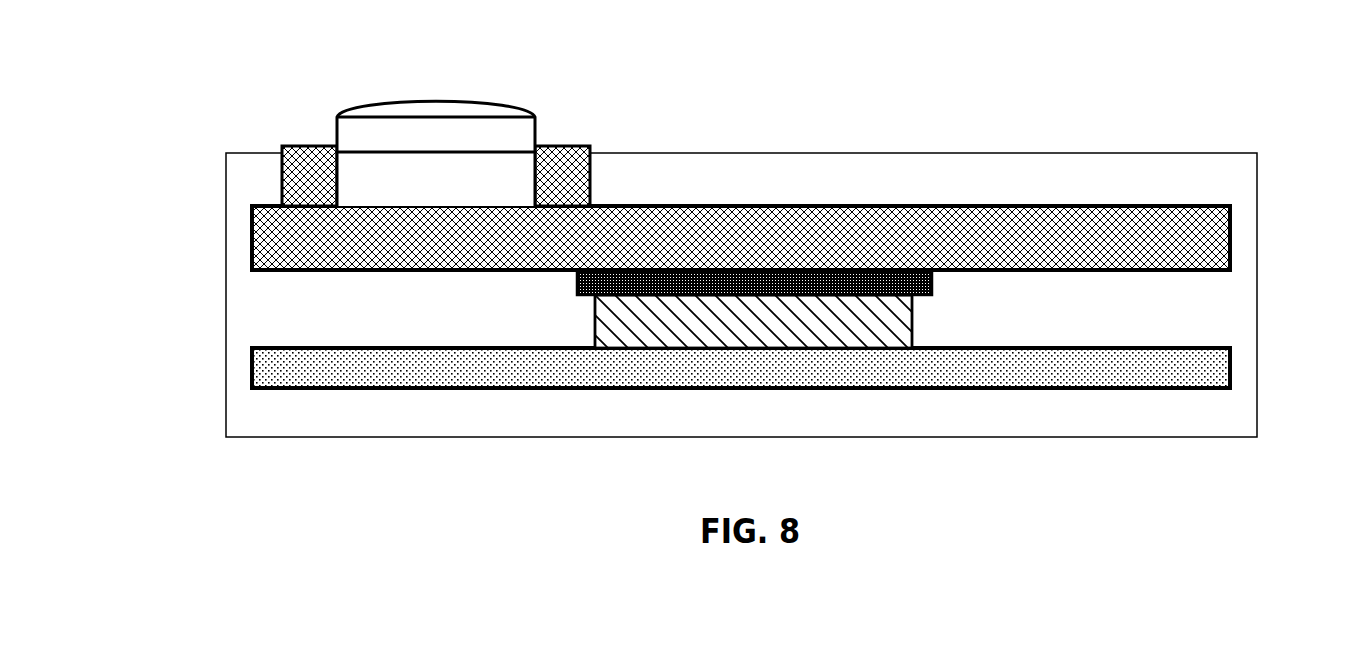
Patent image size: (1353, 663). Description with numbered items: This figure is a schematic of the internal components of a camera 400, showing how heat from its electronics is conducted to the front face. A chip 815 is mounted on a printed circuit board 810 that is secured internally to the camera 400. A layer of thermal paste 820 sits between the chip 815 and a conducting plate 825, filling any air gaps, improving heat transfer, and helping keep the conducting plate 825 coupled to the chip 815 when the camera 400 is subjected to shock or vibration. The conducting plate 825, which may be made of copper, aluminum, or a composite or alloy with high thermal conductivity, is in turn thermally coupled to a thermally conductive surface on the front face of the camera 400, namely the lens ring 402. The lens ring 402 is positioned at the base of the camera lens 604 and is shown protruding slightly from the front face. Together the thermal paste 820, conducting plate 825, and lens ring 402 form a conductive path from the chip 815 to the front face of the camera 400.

The camera 400 is at (946, 153).
The lens ring 402 is at (562, 145).
The camera lens 604 is at (450, 102).
The printed circuit board 810 is at (290, 372).
The chip 815 is at (885, 323).
The thermal paste 820 is at (605, 278).
The conducting plate 825 is at (1210, 227).